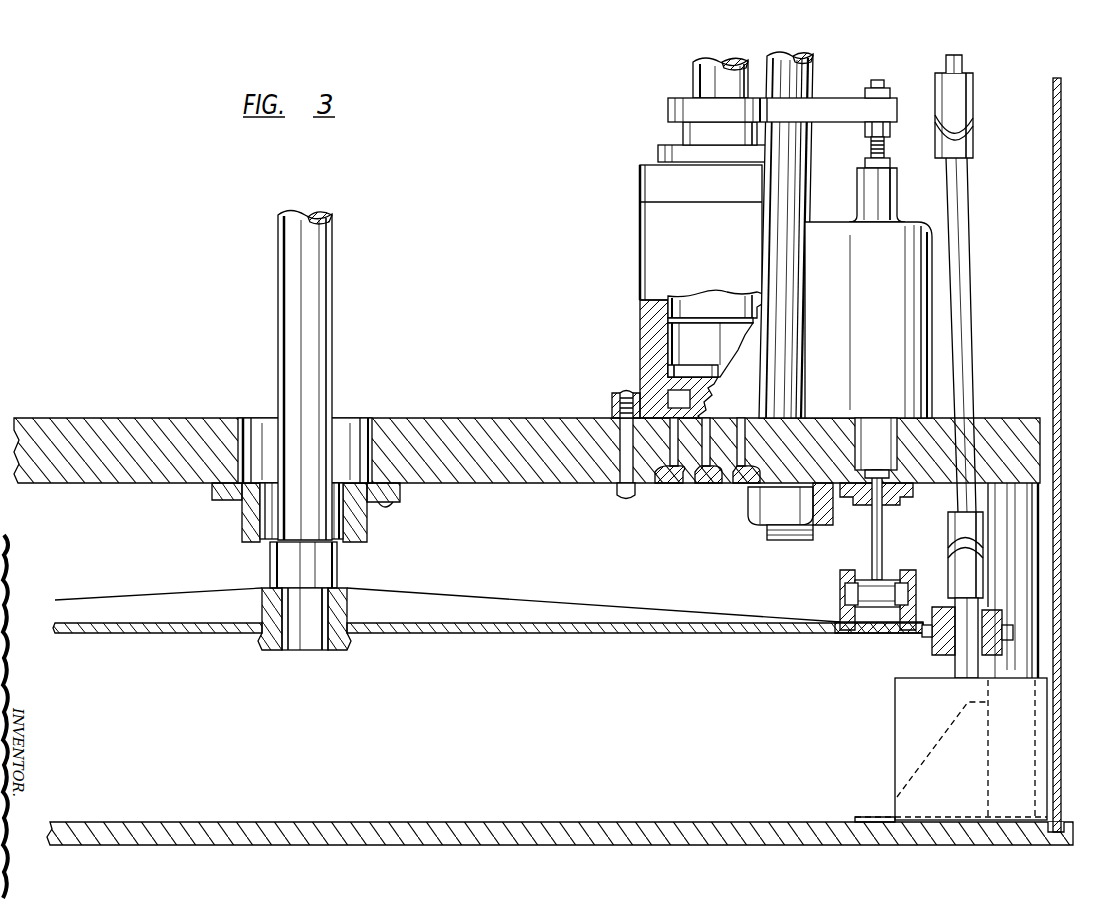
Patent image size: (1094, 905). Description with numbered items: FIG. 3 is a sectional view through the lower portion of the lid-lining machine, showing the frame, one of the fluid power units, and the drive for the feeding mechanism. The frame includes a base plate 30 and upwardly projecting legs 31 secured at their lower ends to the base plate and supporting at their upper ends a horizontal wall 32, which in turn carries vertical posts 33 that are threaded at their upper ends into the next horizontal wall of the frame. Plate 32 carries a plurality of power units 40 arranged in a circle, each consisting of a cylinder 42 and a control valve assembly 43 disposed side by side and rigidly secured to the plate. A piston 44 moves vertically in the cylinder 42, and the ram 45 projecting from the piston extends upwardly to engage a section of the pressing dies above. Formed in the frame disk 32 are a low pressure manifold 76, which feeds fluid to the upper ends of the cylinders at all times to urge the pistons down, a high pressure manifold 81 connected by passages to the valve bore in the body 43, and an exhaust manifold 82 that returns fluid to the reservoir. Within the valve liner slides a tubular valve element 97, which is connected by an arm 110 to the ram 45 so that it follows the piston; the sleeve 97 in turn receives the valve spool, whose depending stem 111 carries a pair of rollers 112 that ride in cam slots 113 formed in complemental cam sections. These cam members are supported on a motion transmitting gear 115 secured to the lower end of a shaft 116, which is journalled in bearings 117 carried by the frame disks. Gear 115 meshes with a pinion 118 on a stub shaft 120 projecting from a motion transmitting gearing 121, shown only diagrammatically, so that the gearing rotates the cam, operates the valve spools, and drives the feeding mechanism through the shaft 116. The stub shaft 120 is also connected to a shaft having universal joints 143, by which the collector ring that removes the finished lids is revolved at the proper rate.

The base plate 30 is at (617, 822).
The legs 31 is at (1008, 658).
The horizontal wall 32 is at (468, 418).
The vertical posts 33 is at (814, 66).
The power unit 40 is at (633, 269).
The cylinder 42 is at (642, 360).
The control valve assembly 43 is at (860, 311).
The piston 44 is at (710, 354).
The ram 45 is at (716, 63).
The manifold 76 is at (723, 486).
The second manifold 81 is at (657, 485).
The third manifold 82 is at (752, 468).
The tubular valve element 97 is at (896, 206).
The arm 110 is at (833, 106).
The stem 111 is at (870, 546).
The rollers 112 is at (840, 607).
The cam slots 113 is at (840, 582).
The motion transmitting gear 115 is at (672, 632).
The shaft 116 is at (318, 323).
The bearings 117 is at (333, 481).
The pinion 118 is at (935, 647).
The stub shaft 120 is at (965, 662).
The motion transmitting gearing 121 is at (905, 728).
The universal joints 143 is at (970, 118).